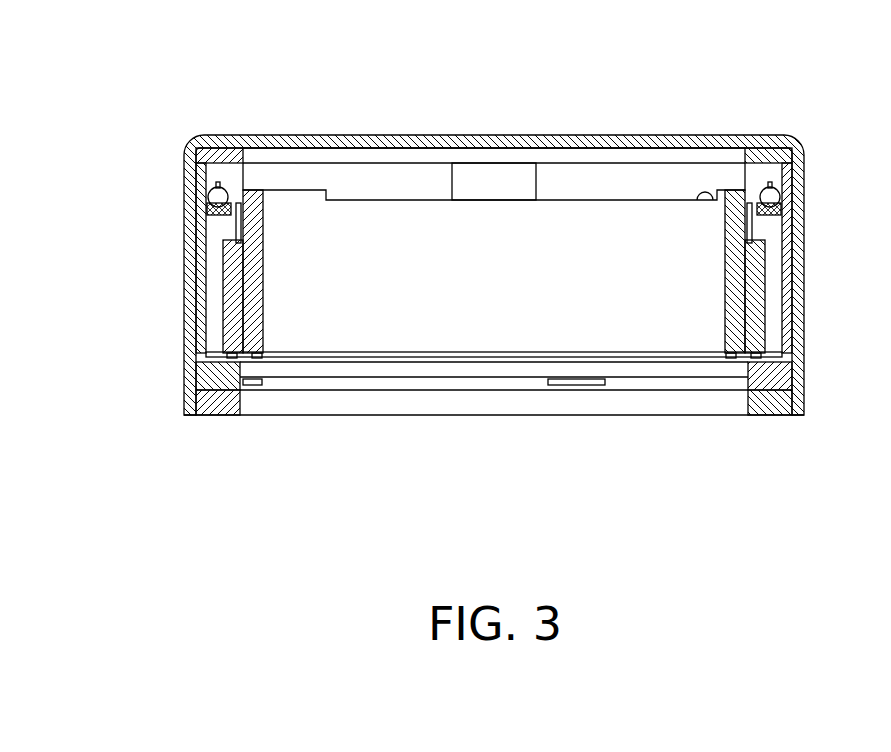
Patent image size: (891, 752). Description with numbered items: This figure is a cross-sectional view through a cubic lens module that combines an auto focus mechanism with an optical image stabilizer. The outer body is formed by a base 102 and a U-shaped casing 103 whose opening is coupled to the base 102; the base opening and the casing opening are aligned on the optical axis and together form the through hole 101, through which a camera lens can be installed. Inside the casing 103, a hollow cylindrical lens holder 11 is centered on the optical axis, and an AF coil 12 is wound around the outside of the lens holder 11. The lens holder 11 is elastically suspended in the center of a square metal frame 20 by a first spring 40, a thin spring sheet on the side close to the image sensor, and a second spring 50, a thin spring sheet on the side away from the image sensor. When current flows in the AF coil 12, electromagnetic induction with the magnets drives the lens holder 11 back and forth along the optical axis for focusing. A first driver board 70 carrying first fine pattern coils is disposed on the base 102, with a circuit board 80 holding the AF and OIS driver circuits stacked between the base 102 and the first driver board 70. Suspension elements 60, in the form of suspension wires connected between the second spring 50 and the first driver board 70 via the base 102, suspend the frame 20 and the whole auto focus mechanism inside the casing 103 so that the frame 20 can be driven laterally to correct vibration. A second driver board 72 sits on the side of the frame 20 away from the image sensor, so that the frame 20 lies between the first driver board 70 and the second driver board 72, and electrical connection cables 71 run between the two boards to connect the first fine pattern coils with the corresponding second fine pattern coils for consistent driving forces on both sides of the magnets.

The through hole 101 is at (539, 100).
The electrical connection cable 71 is at (494, 190).
The second spring 50 is at (630, 200).
The second driver board 72 is at (753, 156).
The suspension element 60 is at (212, 193).
The lens holder 11 is at (240, 234).
The frame 20 is at (204, 258).
The AF coil 12 is at (253, 304).
The casing 103 is at (203, 357).
The first driver board 70 is at (778, 356).
The base 102 is at (226, 410).
The circuit board 80 is at (358, 379).
The first spring 40 is at (684, 363).